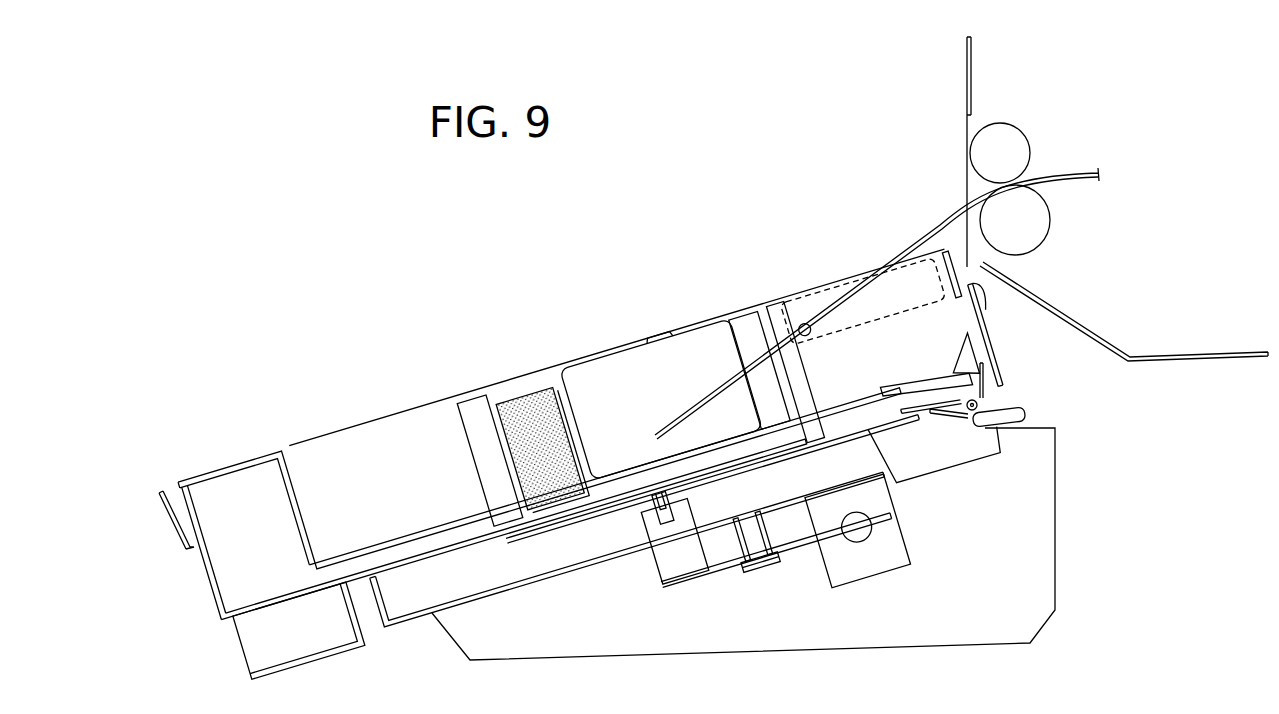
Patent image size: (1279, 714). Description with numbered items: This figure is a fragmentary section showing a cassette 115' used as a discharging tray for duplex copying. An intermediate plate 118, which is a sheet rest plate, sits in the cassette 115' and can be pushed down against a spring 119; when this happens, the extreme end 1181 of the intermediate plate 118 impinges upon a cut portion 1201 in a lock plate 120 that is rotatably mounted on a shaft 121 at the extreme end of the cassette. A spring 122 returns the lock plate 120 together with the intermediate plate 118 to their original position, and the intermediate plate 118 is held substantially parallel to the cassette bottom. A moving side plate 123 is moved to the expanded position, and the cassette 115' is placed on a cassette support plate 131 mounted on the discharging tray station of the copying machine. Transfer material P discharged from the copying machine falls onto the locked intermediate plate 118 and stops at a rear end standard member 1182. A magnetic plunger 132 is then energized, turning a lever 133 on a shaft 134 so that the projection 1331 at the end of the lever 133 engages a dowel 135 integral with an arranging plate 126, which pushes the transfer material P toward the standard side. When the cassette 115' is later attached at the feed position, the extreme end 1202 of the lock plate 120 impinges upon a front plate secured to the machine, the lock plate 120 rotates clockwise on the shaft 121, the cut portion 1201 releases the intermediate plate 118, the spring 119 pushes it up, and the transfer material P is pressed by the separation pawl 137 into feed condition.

The cassette 115' is at (480, 497).
The intermediate plate 118 is at (418, 522).
The extreme end of the intermediate plate 1181 is at (985, 378).
The rear end standard member 1182 is at (300, 478).
The spring 119 is at (902, 411).
The lock plate 120 is at (980, 432).
The cut portion 1201 is at (960, 382).
The extreme end of the lock plate 1202 is at (1005, 422).
The shaft 121 is at (982, 403).
The spring 122 is at (948, 412).
The moving side plate 123 is at (603, 387).
The arranging plate 126 is at (475, 410).
The cassette support plate 131 is at (393, 623).
The magnetic plunger 132 is at (858, 570).
The lever 133 is at (797, 551).
The projection 1331 is at (665, 572).
The shaft 134 is at (743, 535).
The dowel 135 is at (680, 508).
The separation pawl 137 is at (976, 292).
The transfer material P is at (922, 234).